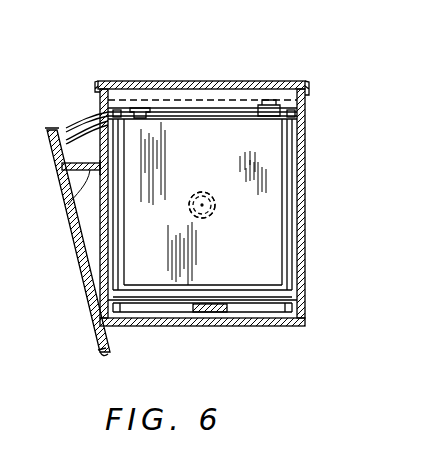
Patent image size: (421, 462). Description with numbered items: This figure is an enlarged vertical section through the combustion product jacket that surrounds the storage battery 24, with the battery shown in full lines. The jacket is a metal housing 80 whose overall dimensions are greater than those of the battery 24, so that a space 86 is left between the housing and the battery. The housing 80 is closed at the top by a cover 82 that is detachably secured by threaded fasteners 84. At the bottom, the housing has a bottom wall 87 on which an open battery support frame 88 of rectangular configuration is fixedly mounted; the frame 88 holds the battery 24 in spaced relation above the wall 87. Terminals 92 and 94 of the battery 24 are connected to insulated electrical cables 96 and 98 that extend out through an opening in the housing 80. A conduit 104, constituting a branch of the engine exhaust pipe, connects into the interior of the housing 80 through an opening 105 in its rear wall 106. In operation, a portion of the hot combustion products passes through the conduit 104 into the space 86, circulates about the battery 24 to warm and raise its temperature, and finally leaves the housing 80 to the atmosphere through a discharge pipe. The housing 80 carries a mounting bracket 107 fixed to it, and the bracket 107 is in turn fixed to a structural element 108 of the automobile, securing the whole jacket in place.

The battery 24 is at (267, 175).
The metal housing 80 is at (307, 202).
The cover 82 is at (255, 82).
The threaded fasteners 84 is at (99, 85).
The space 86 is at (203, 82).
The bottom wall 87 is at (248, 320).
The battery support frame 88 is at (192, 310).
The terminal 92 is at (147, 103).
The terminal 94 is at (278, 102).
The insulated electrical cable 96 is at (74, 138).
The insulated electrical cable 98 is at (88, 120).
The conduit 104 is at (191, 196).
The opening 105 is at (212, 222).
The rear wall 106 is at (223, 95).
The mounting bracket 107 is at (77, 220).
The structural element 108 is at (62, 167).